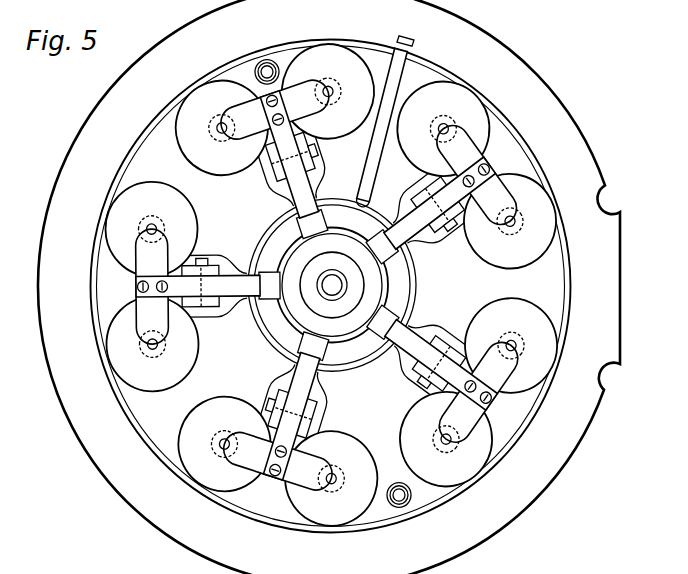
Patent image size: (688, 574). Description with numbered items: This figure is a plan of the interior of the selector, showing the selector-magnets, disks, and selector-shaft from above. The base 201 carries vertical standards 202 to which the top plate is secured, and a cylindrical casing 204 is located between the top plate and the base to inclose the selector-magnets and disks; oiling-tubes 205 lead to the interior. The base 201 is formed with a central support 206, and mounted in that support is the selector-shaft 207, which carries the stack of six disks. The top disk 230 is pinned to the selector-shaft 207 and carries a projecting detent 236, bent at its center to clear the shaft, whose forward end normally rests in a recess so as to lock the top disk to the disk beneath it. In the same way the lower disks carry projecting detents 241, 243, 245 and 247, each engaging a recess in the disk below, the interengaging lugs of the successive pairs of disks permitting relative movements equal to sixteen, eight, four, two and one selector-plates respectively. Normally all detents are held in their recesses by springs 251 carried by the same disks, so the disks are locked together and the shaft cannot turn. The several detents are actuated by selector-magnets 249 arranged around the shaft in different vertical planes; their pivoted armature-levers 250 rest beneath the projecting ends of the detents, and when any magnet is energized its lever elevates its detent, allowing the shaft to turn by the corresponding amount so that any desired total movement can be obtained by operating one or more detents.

The base 201 is at (626, 270).
The vertical standards 202 is at (266, 64).
The cylindrical casing 204 is at (570, 307).
The oiling-tubes 205 is at (404, 66).
The central support 206 is at (417, 277).
The selector-shaft 207 is at (336, 272).
The top disk 230 is at (332, 293).
The projecting detent 236 is at (311, 221).
The projecting detent 241 is at (264, 272).
The projecting detent 243 is at (307, 349).
The projecting detent 245 is at (396, 328).
The projecting detent 247 is at (393, 252).
The selector-magnets 249 is at (340, 285).
The armature-levers 250 is at (307, 184).
The springs 251 is at (313, 229).